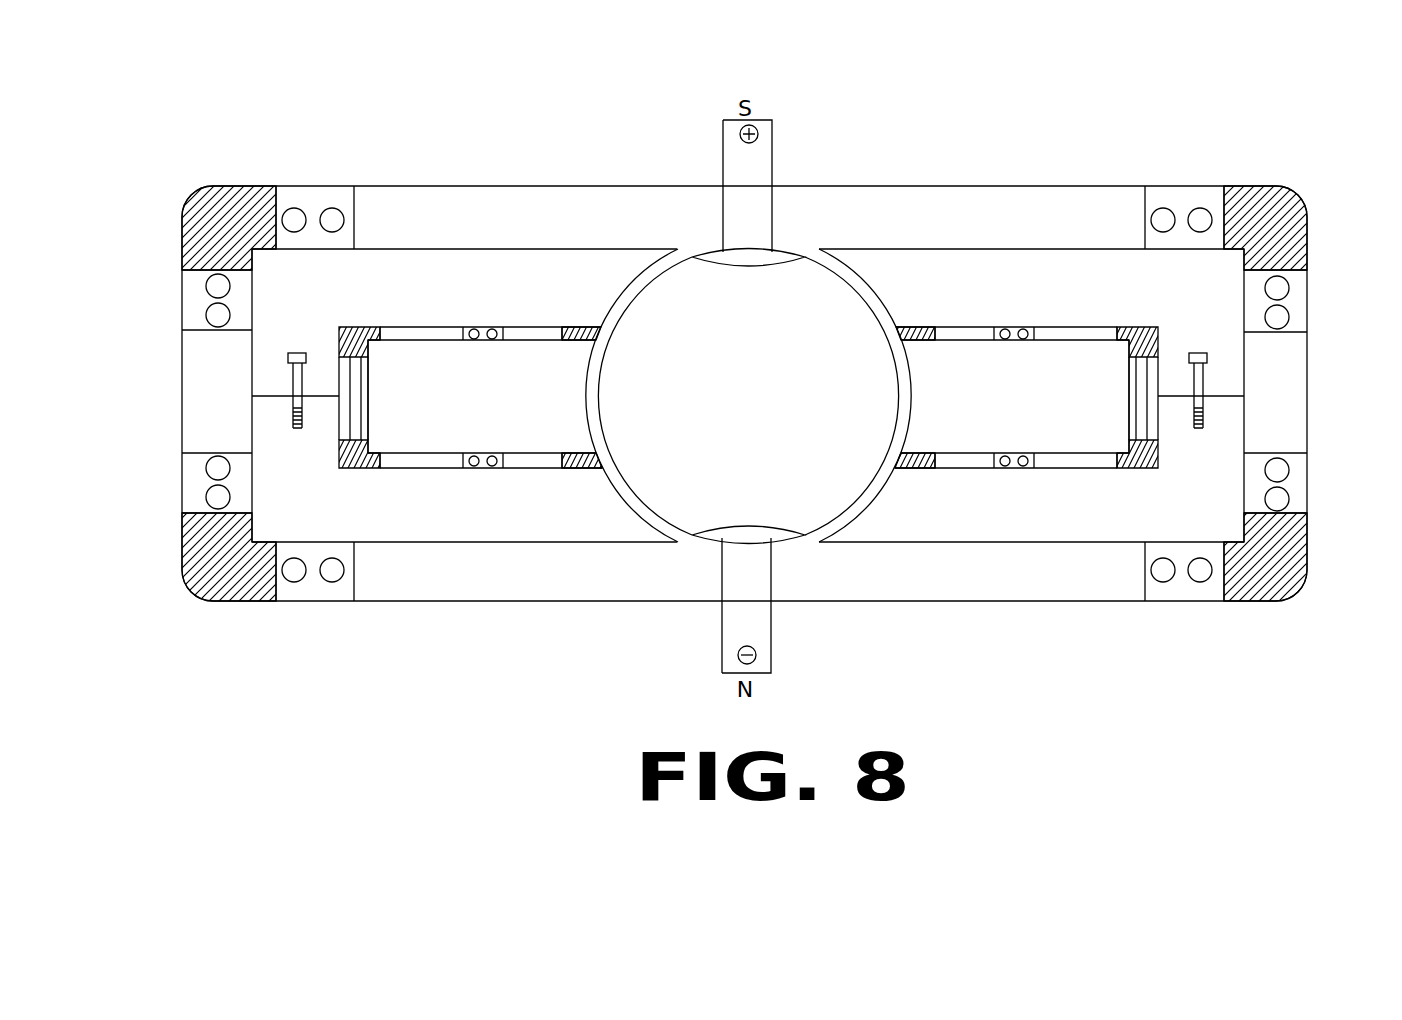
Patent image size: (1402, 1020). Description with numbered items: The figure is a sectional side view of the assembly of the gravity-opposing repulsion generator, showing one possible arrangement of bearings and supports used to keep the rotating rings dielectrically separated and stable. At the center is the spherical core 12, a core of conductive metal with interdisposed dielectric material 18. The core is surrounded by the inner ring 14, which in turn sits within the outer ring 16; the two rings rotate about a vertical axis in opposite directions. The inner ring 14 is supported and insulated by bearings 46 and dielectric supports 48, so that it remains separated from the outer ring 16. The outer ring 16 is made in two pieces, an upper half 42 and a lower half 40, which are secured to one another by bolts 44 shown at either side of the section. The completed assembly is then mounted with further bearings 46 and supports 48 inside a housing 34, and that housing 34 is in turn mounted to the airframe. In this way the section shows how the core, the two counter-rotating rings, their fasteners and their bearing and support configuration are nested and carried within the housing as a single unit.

The spherical core 12 is at (822, 283).
The inner ring 14 is at (1003, 368).
The outer ring 16 is at (940, 283).
The dielectric material 18 is at (1060, 330).
The housing 34 is at (393, 183).
The lower half 40 is at (300, 467).
The upper half 42 is at (276, 277).
The bolts 44 is at (290, 352).
The bearings 46 is at (493, 467).
The dielectric supports 48 is at (1285, 570).